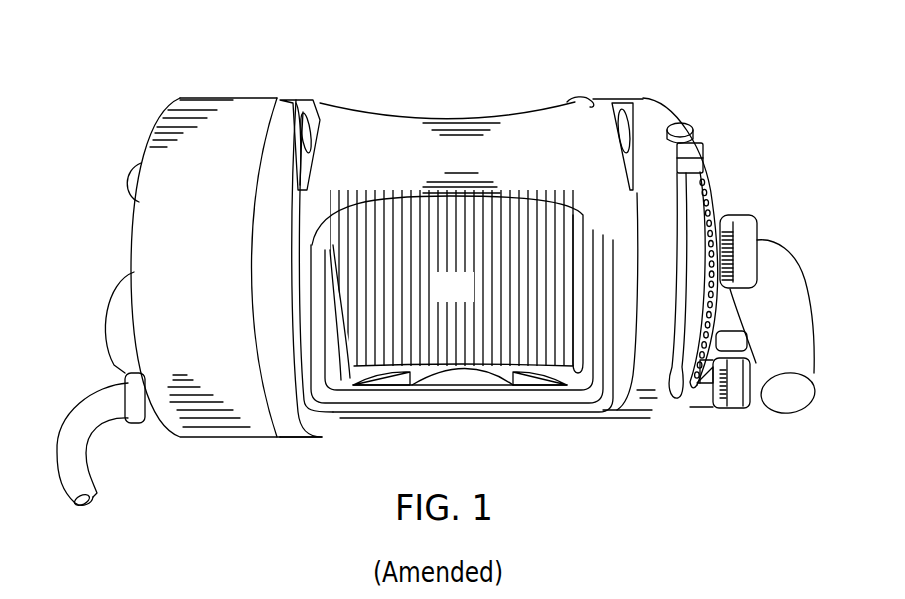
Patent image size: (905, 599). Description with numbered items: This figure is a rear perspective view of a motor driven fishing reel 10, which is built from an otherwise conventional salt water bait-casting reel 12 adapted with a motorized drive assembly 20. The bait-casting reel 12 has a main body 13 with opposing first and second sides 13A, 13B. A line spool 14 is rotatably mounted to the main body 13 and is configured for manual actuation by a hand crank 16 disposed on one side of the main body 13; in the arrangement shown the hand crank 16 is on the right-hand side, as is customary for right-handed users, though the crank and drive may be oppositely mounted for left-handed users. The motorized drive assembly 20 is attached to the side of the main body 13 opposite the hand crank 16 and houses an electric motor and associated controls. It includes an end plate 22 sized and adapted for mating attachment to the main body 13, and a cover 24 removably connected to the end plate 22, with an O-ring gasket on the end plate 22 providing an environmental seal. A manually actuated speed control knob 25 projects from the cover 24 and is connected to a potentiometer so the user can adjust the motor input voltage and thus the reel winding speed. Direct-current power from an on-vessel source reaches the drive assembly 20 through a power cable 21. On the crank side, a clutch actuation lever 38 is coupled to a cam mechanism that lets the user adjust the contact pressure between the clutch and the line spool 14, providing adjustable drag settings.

The motor driven fishing reel 10 is at (177, 82).
The bait-casting reel 12 is at (453, 117).
The main body 13 is at (537, 413).
The first side 13A is at (280, 449).
The second side 13B is at (620, 422).
The line spool 14 is at (468, 300).
The hand crank 16 is at (782, 252).
The motorized drive assembly 20 is at (127, 222).
The power cable 21 is at (83, 463).
The end plate 22 is at (285, 309).
The cover 24 is at (214, 303).
The speed control knob 25 is at (127, 173).
The clutch actuation lever 38 is at (703, 408).